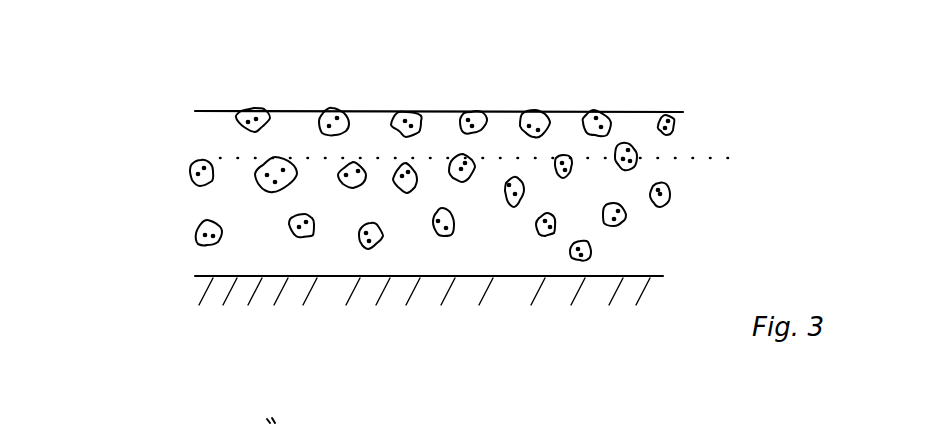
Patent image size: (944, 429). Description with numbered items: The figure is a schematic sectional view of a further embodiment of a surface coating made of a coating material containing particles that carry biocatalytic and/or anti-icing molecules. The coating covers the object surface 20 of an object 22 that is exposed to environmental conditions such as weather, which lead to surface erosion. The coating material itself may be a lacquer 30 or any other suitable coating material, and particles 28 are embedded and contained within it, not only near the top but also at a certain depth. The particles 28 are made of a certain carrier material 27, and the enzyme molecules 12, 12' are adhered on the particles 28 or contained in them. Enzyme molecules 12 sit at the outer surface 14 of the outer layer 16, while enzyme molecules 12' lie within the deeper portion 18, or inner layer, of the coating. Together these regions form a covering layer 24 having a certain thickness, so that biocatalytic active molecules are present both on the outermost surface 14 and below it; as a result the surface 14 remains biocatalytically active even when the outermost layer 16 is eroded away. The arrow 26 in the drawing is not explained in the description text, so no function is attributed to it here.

The enzyme molecules 12 is at (463, 196).
The enzyme molecules 12' is at (472, 94).
The outer surface 14 is at (497, 109).
The outer layer 16 is at (770, 119).
The deeper portion 18 is at (759, 168).
The object surface 20 is at (675, 126).
The object 22 is at (361, 295).
The covering layer 24 is at (829, 120).
The direction arrow 26 is at (494, 243).
The carrier material 27 is at (197, 157).
The particles 28 is at (341, 110).
The lacquer 30 is at (431, 287).